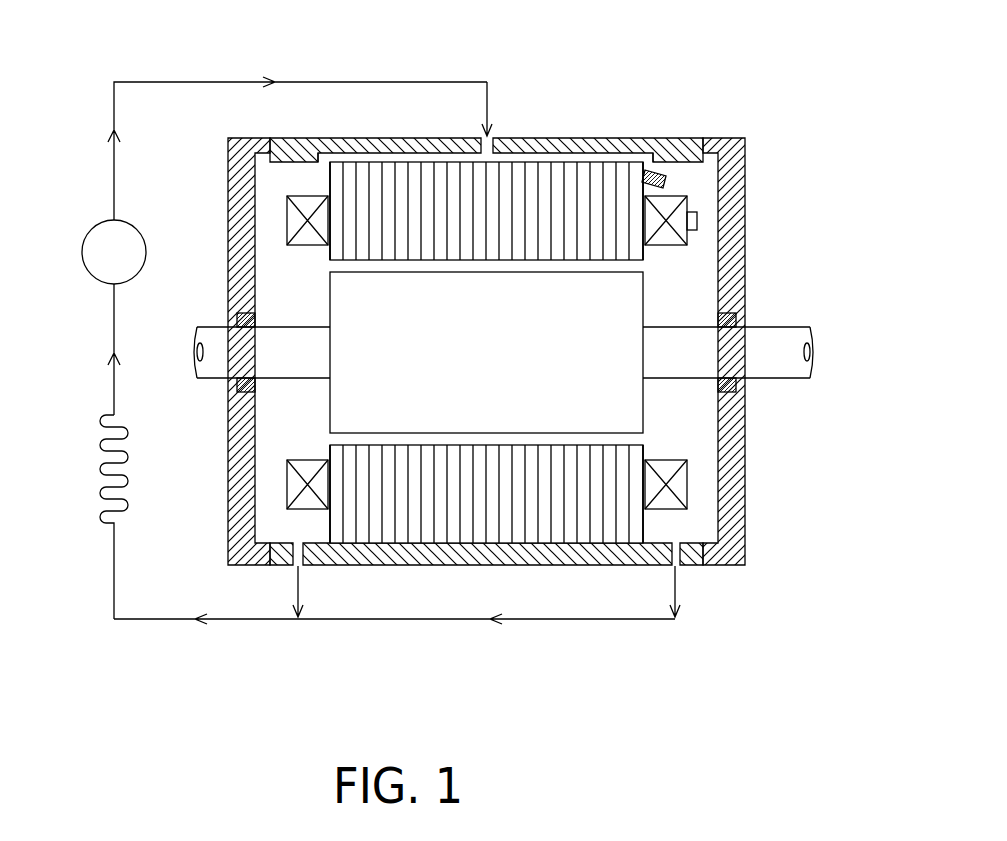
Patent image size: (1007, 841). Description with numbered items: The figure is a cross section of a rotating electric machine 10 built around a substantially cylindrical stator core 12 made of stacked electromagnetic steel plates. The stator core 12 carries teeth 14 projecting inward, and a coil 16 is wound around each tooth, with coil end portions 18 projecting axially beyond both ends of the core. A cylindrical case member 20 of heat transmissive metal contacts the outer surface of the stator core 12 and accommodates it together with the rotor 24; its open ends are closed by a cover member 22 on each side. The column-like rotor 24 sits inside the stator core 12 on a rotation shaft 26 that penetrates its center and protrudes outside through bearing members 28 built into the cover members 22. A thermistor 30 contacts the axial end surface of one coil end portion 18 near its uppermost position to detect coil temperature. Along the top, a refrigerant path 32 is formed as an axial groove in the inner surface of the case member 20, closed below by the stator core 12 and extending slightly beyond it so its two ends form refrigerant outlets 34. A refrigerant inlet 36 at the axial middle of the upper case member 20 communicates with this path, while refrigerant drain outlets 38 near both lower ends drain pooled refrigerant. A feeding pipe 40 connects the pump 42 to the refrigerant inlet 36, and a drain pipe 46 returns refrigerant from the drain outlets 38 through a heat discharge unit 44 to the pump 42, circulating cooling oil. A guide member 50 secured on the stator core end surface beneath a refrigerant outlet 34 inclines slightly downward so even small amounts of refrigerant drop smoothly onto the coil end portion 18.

The rotating electric machine 10 is at (507, 337).
The stator core 12 is at (322, 264).
The teeth 14 is at (645, 262).
The coil 16 is at (272, 216).
The coil end portion 18 is at (284, 235).
The case member 20 is at (682, 138).
The cover member 22 is at (228, 552).
The rotor 24 is at (470, 360).
The rotation shaft 26 is at (205, 325).
The bearing member 28 is at (236, 385).
The thermistor 30 is at (698, 221).
The refrigerant path 32 is at (578, 158).
The refrigerant outlet 34 is at (322, 140).
The refrigerant inlet 36 is at (493, 135).
The refrigerant drain outlet 38 is at (300, 568).
The feeding pipe 40 is at (383, 80).
The pump 42 is at (88, 232).
The heat discharge unit 44 is at (92, 417).
The drain pipe 46 is at (425, 625).
The guide member 50 is at (668, 182).